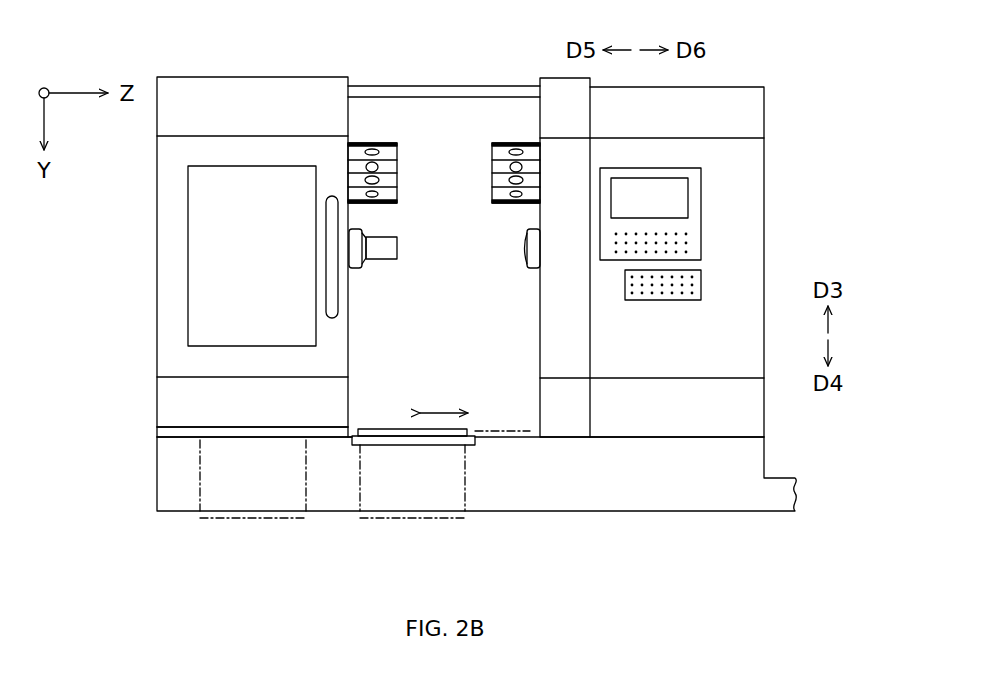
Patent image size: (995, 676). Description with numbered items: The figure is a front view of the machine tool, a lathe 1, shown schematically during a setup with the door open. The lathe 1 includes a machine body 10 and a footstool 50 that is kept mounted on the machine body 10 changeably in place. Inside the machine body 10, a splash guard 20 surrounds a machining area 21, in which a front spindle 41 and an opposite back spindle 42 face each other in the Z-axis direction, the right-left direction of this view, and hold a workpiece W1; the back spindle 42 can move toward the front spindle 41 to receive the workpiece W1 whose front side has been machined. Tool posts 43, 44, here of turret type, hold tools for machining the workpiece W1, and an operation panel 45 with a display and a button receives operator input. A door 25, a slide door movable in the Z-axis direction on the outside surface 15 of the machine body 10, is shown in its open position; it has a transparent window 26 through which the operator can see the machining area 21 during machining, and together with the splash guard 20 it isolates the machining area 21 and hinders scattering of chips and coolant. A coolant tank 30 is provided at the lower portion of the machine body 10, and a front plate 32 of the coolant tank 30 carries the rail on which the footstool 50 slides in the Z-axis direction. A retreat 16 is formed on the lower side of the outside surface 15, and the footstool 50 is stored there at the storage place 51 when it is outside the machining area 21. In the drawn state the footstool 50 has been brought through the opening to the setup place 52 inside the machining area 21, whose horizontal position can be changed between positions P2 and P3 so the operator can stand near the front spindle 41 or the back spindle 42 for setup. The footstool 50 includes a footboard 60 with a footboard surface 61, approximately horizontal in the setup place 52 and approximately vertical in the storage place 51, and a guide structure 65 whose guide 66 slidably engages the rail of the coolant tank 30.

The lathe 1 is at (176, 63).
The machine body 10 is at (699, 261).
The outside surface 15 is at (684, 368).
The retreat 16 is at (118, 474).
The splash guard 20 is at (742, 166).
The machining area 21 is at (432, 395).
The door 25 is at (157, 220).
The transparent window 26 is at (268, 271).
The coolant tank 30 is at (421, 502).
The front plate 32 is at (608, 483).
The front spindle 41 is at (359, 268).
The back spindle 42 is at (528, 268).
The tool post 43 is at (387, 143).
The tool post 44 is at (503, 143).
The operation panel 45 is at (702, 222).
The footstool 50 is at (354, 448).
The storage place 51 is at (253, 503).
The setup place 52 is at (157, 429).
The footboard 60 is at (260, 466).
The footboard surface 61 is at (372, 429).
The guide structure 65 is at (190, 441).
The guide 66 is at (392, 445).
The workpiece W1 is at (397, 260).
The horizontal position P2 is at (413, 506).
The horizontal position P3 is at (497, 448).